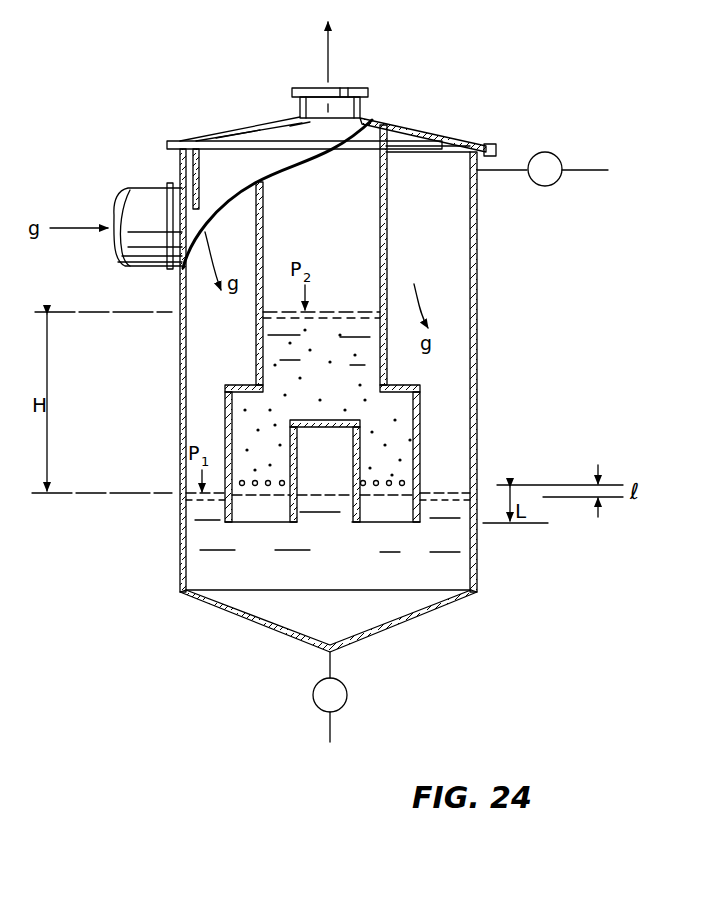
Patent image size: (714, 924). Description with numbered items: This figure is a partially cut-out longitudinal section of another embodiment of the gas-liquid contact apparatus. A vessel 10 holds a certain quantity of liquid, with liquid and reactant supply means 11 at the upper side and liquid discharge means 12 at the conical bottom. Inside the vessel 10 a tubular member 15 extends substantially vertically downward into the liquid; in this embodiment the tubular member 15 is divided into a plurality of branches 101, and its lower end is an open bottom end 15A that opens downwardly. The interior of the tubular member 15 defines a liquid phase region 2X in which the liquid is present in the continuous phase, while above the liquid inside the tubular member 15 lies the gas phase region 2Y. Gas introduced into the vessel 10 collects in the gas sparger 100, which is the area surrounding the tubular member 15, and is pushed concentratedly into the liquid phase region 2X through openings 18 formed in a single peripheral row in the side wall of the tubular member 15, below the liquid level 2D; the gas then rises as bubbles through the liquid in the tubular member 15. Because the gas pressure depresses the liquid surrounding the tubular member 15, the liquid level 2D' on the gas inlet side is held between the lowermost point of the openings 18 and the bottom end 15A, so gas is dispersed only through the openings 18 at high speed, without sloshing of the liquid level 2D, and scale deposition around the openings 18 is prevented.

The vessel 10 is at (482, 354).
The liquid and reactant supply means 11 is at (512, 168).
The liquid discharge means 12 is at (332, 732).
The tubular member 15 is at (388, 274).
The bottom end 15A is at (300, 524).
The openings 18 is at (252, 488).
The gas sparger 100 is at (216, 358).
The branches 101 is at (222, 440).
The liquid level 2D is at (321, 304).
The liquid level on the gas inlet side 2D' is at (361, 492).
The liquid phase region 2X is at (275, 516).
The gas phase region 2Y is at (323, 204).